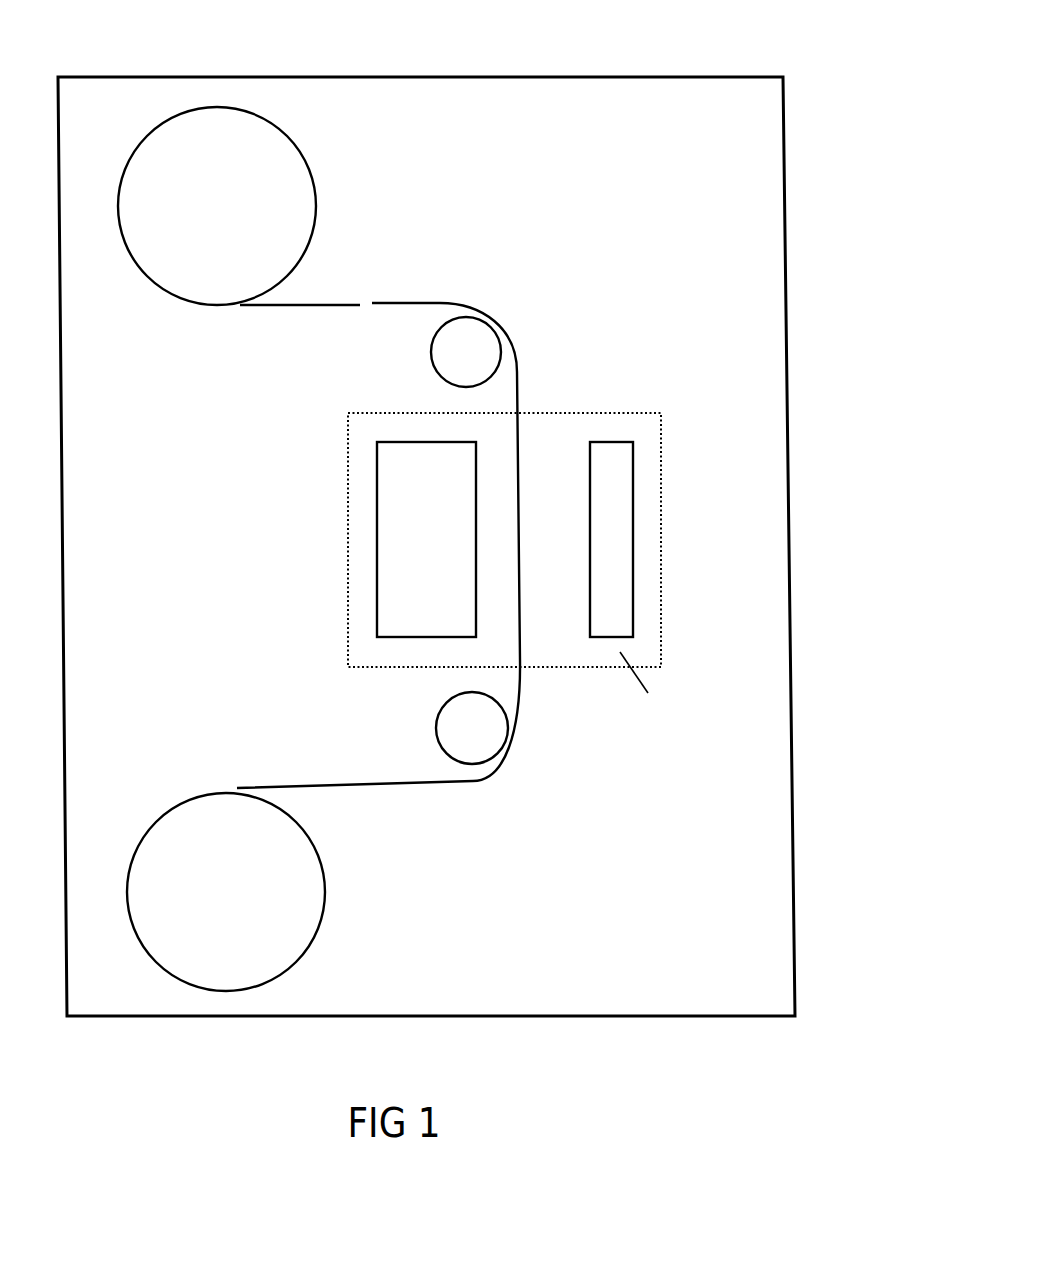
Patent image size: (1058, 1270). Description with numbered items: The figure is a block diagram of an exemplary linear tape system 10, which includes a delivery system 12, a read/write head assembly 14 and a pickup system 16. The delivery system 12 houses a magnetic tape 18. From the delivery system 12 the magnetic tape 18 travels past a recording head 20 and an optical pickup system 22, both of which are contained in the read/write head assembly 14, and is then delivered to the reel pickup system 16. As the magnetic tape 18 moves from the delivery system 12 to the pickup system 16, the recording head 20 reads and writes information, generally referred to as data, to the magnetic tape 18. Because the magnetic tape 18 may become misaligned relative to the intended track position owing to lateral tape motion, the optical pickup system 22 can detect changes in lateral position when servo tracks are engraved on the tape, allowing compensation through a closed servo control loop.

The linear tape system 10 is at (663, 72).
The delivery system 12 is at (173, 305).
The read/write head assembly 14 is at (570, 410).
The pickup system 16 is at (183, 798).
The magnetic tape 18 is at (395, 290).
The recording head 20 is at (418, 443).
The optical pickup system 22 is at (633, 523).